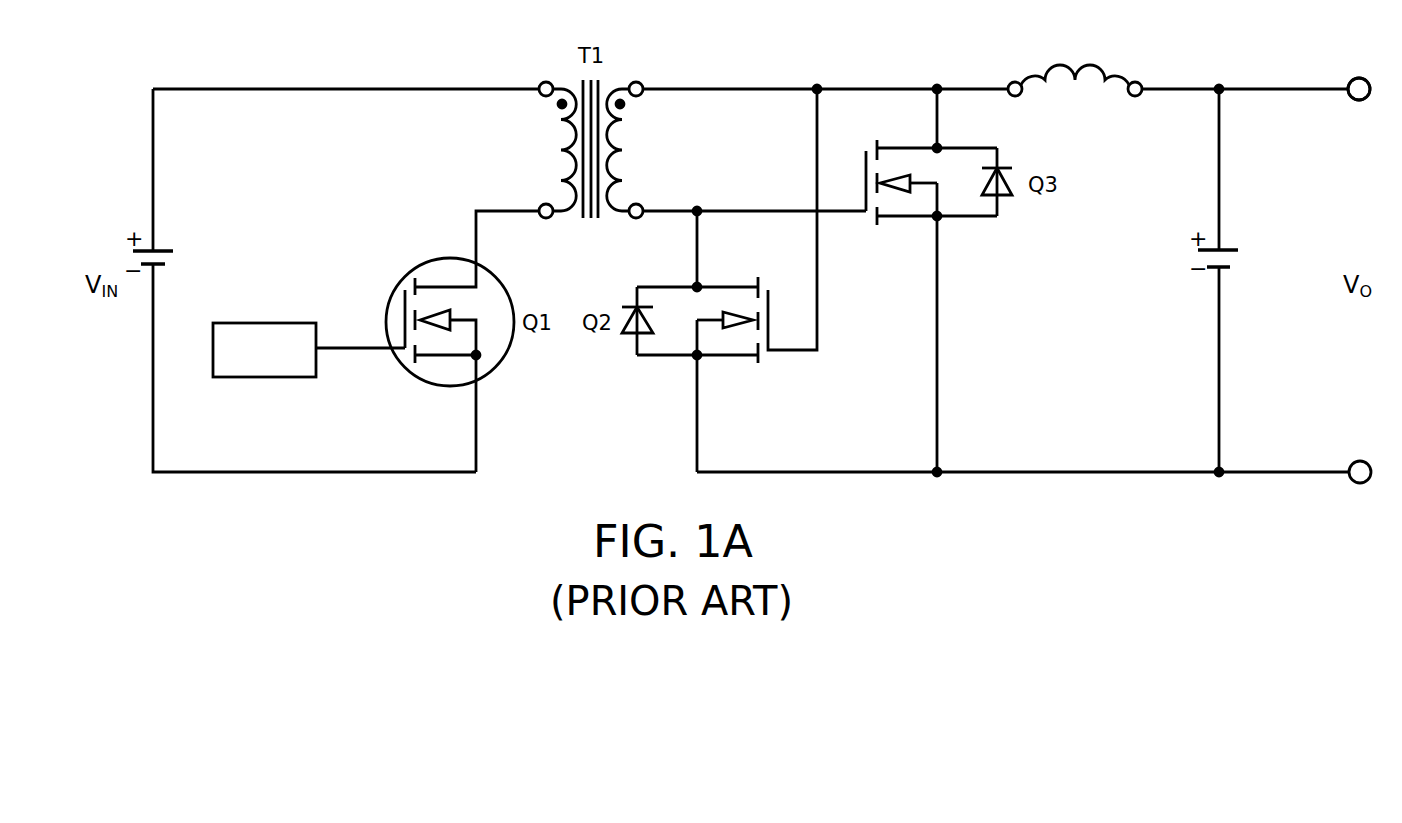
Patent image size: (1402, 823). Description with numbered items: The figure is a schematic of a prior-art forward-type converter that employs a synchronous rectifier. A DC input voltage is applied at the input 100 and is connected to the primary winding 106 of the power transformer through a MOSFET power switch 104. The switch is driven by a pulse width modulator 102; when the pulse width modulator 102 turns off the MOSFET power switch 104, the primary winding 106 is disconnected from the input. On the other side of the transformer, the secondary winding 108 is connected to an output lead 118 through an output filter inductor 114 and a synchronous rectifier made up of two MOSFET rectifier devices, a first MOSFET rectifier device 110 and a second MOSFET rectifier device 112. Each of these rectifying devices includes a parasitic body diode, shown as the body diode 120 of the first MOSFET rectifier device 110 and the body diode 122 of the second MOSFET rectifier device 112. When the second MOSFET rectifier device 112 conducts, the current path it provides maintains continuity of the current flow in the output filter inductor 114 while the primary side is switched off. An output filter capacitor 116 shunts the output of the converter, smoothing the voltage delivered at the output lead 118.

The input 100 is at (171, 236).
The pulse width modulator 102 is at (261, 370).
The MOSFET power switch Q1 104 is at (419, 240).
The primary winding 106 is at (564, 70).
The secondary winding 108 is at (621, 70).
The MOSFET rectifier device Q2 110 is at (771, 372).
The MOSFET rectifier device Q3 112 is at (886, 225).
The output filter inductor 114 is at (1147, 72).
The output filter capacitor 116 is at (1229, 231).
The output lead 118 is at (1351, 68).
The body diode 120 is at (634, 374).
The body diode 122 is at (1006, 205).